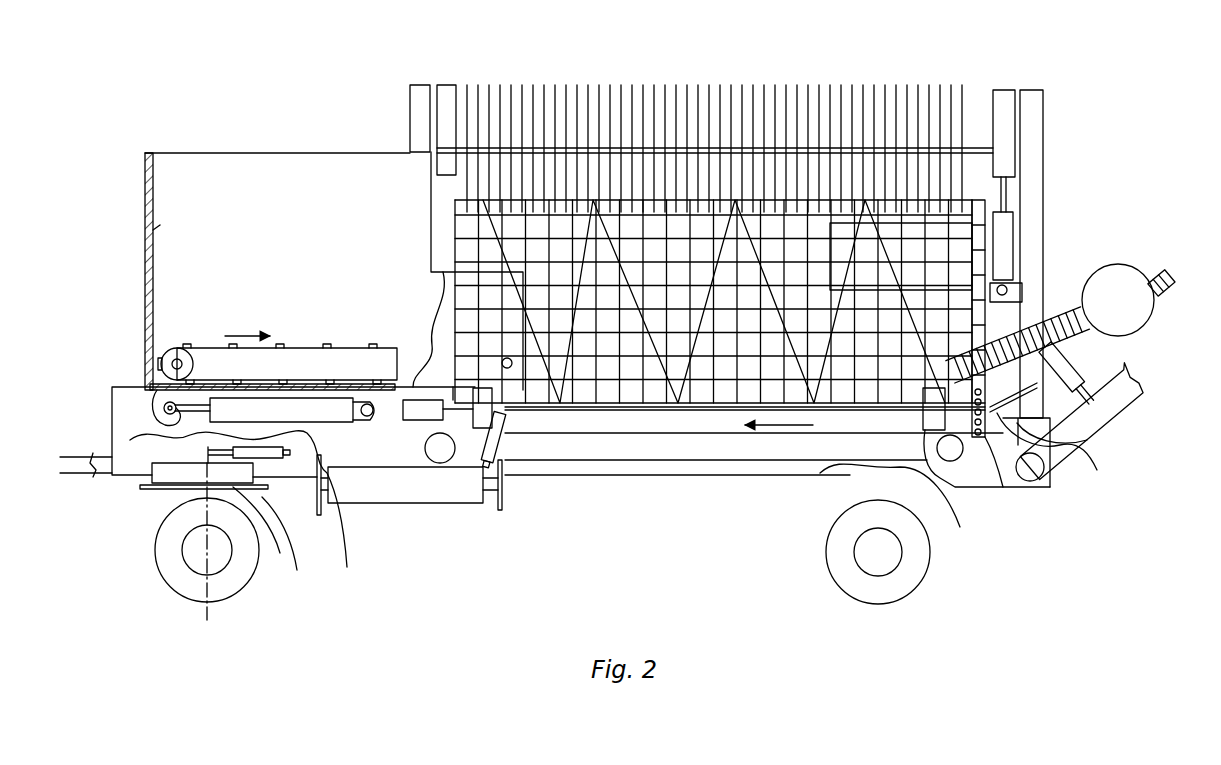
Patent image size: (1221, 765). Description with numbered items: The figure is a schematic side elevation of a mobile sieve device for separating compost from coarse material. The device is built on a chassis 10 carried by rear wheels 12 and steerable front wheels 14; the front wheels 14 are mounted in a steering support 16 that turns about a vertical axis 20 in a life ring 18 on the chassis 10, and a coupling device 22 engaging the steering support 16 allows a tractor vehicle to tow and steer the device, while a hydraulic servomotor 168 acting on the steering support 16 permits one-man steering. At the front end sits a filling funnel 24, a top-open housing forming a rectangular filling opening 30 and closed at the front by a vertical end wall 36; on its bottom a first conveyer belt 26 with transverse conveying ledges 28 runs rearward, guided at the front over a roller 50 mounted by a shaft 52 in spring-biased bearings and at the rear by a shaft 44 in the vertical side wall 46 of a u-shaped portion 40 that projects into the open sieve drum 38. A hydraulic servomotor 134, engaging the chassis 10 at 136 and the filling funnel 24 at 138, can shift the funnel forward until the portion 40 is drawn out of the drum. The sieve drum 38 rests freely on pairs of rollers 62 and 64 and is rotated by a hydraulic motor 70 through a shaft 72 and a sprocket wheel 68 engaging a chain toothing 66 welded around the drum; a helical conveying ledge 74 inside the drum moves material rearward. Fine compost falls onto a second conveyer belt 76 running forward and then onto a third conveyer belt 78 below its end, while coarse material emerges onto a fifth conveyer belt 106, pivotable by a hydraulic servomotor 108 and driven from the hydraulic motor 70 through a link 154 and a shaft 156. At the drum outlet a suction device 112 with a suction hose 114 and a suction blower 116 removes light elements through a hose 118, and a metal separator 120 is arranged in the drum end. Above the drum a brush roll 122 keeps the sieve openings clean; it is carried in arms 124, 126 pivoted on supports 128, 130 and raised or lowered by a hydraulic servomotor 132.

The chassis 10 is at (723, 477).
The rear wheels 12 is at (915, 568).
The front wheels 14 is at (248, 572).
The steering support 16 is at (155, 508).
The life ring 18 is at (268, 460).
The vertical axis 20 is at (232, 585).
The coupling device 22 is at (267, 432).
The filling funnel 24 is at (142, 192).
The first conveyer belt 26 is at (298, 355).
The conveying ledges 28 is at (340, 348).
The filling opening 30 is at (297, 168).
The vertical end wall 36 is at (155, 226).
The sieve drum 38 is at (632, 410).
The portion of the filling funnel 40 is at (533, 437).
The shaft 44 is at (502, 363).
The vertical side wall 46 is at (443, 293).
The roller 50 is at (178, 348).
The shaft 52 is at (162, 362).
The rollers 62 is at (470, 440).
The rollers 64 is at (935, 430).
The toothing 66 is at (985, 213).
The wheel 68 is at (990, 440).
The hydraulic motor 70 is at (420, 410).
The shaft 72 is at (830, 462).
The helical conveying ledge 74 is at (697, 362).
The second conveyer belt 76 is at (597, 462).
The third conveyer belt 78 is at (346, 482).
The fifth conveyer belt 106 is at (1105, 400).
The hydraulic servomotor 108 is at (1060, 367).
The suction device 112 is at (1118, 232).
The suction hose 114 is at (1060, 300).
The suction blower 116 is at (1125, 275).
The hose 118 is at (1165, 280).
The metal separator 120 is at (920, 250).
The brush roll 122 is at (572, 95).
The arm 124 is at (447, 98).
The arm 126 is at (1003, 95).
The support 128 is at (420, 113).
The support 130 is at (1032, 117).
The hydraulic servomotor 132 is at (1002, 245).
The hydraulic servomotor 134 is at (330, 412).
The chassis engagement point 136 is at (385, 400).
The filling funnel engagement point 138 is at (165, 420).
The link 154 is at (1075, 452).
The shaft 156 is at (1085, 430).
The hydraulic servomotor 168 is at (254, 521).